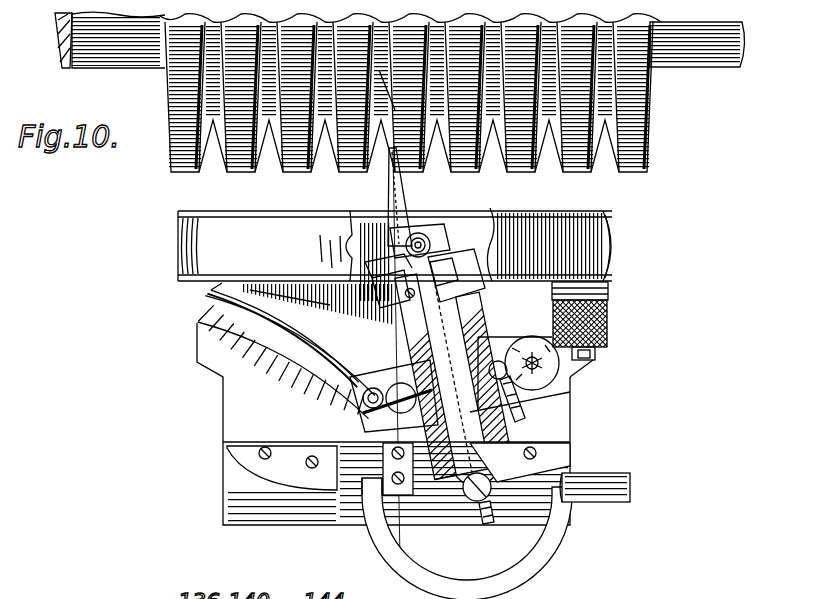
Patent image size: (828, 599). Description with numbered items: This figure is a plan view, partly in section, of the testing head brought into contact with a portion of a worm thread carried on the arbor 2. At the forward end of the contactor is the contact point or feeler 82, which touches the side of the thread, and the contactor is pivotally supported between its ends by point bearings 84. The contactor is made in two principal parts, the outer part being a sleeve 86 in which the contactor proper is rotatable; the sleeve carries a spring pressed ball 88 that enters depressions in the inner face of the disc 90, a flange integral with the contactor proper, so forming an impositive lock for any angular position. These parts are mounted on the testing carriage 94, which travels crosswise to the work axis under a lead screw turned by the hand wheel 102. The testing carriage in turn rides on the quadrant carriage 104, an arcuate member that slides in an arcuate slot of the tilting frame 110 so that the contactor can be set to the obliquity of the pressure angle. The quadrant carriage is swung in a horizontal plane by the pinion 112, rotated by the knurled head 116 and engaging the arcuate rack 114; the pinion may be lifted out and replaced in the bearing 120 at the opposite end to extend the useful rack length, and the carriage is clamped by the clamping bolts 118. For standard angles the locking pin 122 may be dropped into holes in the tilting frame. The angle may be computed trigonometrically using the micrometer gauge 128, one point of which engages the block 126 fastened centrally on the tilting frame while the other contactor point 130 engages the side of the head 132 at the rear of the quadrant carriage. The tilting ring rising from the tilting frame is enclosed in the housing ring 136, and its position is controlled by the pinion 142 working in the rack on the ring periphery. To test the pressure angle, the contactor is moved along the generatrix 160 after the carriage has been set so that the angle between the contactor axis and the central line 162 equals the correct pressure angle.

The arbor 2 is at (668, 66).
The contact point or feeler 82 is at (391, 152).
The point bearings 84 is at (352, 250).
The sleeve 86 is at (440, 288).
The spring pressed ball 88 is at (470, 300).
The disc 90 is at (422, 236).
The testing carriage 94 is at (328, 300).
The hand wheel 102 is at (530, 336).
The quadrant carriage 104 is at (360, 370).
The tilting frame 110 is at (250, 293).
The pinion 112 is at (567, 398).
The arcuate rack 114 is at (212, 336).
The knurled head 116 is at (565, 385).
The clamping bolts 118 is at (392, 384).
The bearing 120 is at (357, 413).
The locking pin 122 is at (495, 526).
The block 126 is at (388, 518).
The micrometer gauge 128 is at (523, 550).
The contactor point 130 is at (610, 478).
The head 132 is at (468, 500).
The housing ring 136 is at (535, 225).
The pinion 142 is at (608, 294).
The generatrix 160 is at (379, 70).
The central line 162 is at (397, 500).